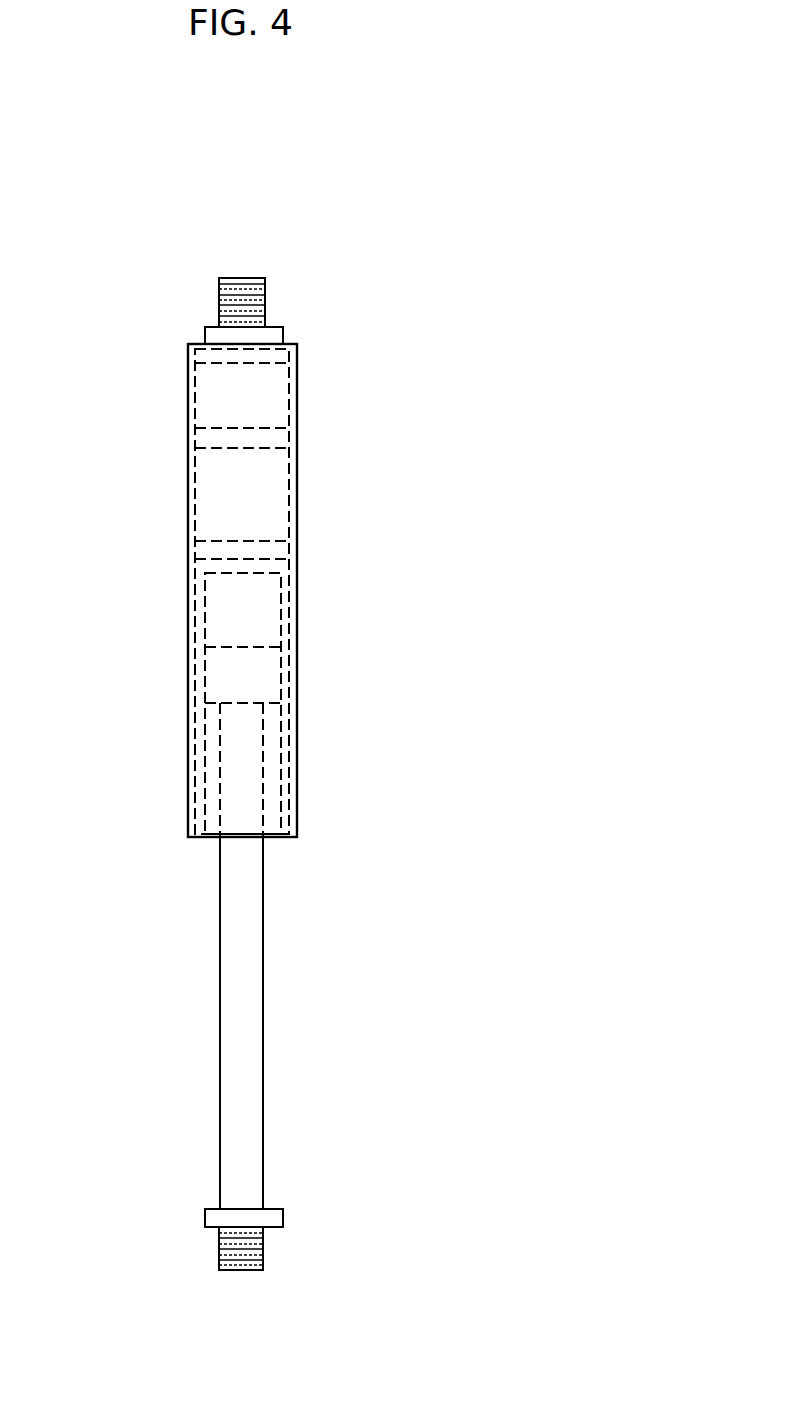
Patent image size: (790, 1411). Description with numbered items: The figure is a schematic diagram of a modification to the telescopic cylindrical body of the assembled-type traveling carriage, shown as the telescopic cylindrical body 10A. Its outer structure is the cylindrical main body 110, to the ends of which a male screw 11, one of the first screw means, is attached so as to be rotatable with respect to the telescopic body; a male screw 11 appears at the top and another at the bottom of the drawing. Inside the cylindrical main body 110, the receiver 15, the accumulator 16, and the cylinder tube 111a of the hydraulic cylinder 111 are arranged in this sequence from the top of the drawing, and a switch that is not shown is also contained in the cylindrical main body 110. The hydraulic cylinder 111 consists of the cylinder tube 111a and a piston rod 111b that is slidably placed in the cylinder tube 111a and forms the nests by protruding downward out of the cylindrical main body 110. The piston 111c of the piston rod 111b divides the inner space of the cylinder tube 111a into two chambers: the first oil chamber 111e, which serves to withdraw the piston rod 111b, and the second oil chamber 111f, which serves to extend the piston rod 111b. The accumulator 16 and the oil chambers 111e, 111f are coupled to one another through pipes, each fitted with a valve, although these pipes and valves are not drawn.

The telescopic cylindrical body 10A is at (399, 210).
The male screw 11 is at (219, 305).
The receiver 15 is at (232, 393).
The accumulator 16 is at (222, 511).
The cylindrical main body 110 is at (297, 517).
The hydraulic cylinder 111 is at (563, 560).
The cylinder tube 111a is at (297, 612).
The piston rod 111b is at (302, 907).
The piston 111c is at (263, 671).
The first oil chamber 111e is at (212, 790).
The second oil chamber 111f is at (242, 622).